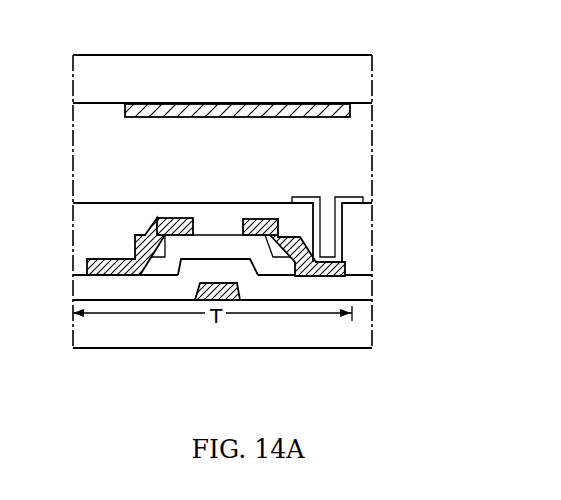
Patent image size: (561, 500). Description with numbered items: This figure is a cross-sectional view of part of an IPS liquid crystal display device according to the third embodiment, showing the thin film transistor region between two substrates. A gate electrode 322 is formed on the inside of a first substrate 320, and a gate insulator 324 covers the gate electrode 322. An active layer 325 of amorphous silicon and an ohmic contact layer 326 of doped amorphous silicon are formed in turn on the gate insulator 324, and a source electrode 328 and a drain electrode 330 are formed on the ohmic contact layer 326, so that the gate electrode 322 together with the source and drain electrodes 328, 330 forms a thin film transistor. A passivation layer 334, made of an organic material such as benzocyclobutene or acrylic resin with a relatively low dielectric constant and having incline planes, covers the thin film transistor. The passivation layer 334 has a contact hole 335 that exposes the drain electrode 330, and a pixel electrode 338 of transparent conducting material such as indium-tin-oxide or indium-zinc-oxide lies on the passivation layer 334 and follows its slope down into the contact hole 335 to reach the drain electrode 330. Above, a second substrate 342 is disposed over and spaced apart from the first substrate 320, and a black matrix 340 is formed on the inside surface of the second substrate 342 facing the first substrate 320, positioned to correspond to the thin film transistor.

The first substrate 320 is at (298, 343).
The gate electrode 322 is at (207, 302).
The gate insulator 324 is at (120, 293).
The active layer 325 is at (217, 243).
The ohmic contact layer 326 is at (178, 219).
The source electrode 328 is at (145, 232).
The drain electrode 330 is at (253, 220).
The passivation layer 334 is at (93, 201).
The contact hole 335 is at (328, 222).
The pixel electrode 338 is at (366, 202).
The black matrix 340 is at (157, 110).
The second substrate 342 is at (246, 72).